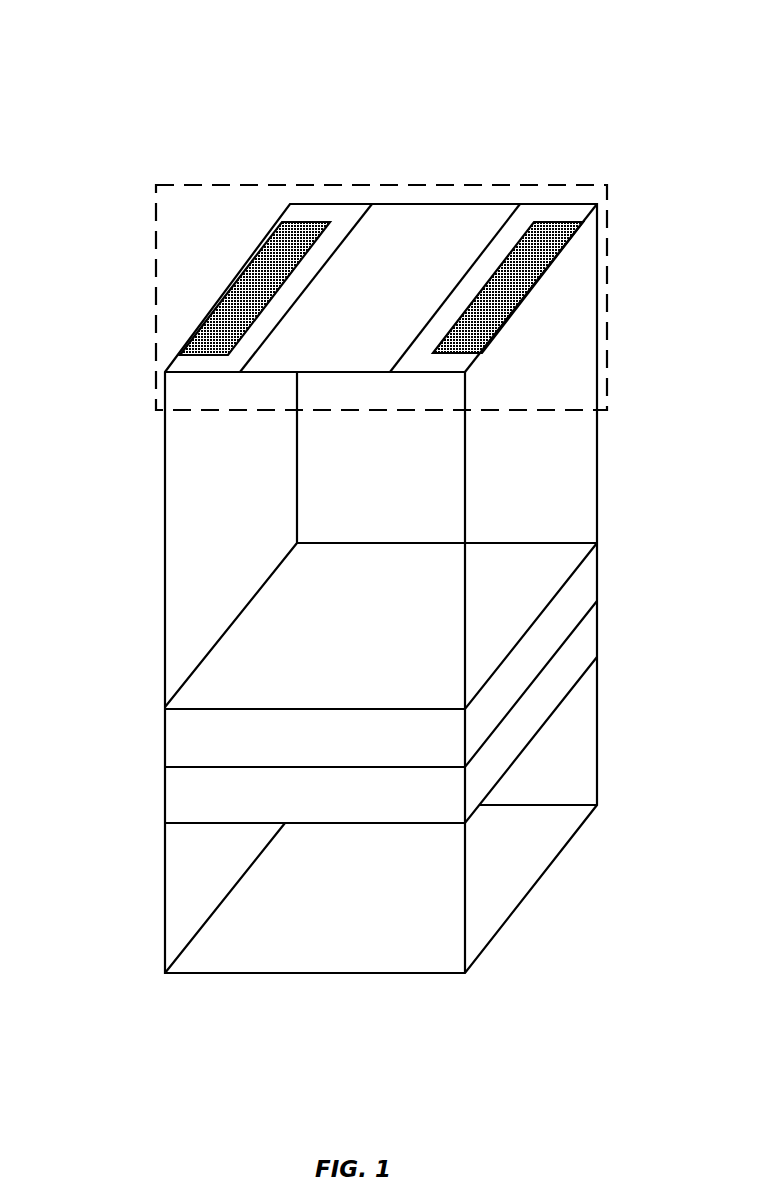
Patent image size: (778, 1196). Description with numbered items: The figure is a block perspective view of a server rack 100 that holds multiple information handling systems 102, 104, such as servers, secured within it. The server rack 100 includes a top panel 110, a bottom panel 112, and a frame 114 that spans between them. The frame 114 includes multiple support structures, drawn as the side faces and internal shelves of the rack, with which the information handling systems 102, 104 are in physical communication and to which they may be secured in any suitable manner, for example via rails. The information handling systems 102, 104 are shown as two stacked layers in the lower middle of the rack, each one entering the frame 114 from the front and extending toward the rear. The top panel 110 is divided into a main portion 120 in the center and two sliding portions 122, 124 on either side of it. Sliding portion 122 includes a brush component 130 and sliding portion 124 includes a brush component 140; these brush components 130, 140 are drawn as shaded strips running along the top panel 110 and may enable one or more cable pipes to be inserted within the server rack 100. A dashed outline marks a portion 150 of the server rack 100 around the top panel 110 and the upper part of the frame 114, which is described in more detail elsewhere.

The server rack 100 is at (550, 90).
The top panel 110 is at (415, 203).
The main portion 120 is at (468, 228).
The sliding portion 122 is at (303, 210).
The sliding portion 124 is at (563, 213).
The brush component 130 is at (235, 300).
The brush component 140 is at (519, 277).
The portion 150 is at (155, 205).
The frame 114 is at (297, 427).
The information handling system 102 is at (193, 732).
The information handling system 104 is at (198, 790).
The bottom panel 112 is at (322, 975).